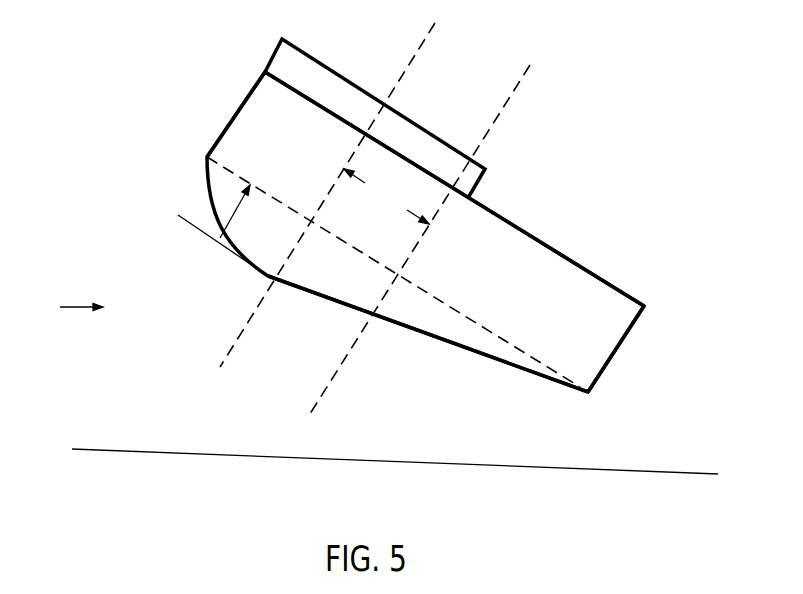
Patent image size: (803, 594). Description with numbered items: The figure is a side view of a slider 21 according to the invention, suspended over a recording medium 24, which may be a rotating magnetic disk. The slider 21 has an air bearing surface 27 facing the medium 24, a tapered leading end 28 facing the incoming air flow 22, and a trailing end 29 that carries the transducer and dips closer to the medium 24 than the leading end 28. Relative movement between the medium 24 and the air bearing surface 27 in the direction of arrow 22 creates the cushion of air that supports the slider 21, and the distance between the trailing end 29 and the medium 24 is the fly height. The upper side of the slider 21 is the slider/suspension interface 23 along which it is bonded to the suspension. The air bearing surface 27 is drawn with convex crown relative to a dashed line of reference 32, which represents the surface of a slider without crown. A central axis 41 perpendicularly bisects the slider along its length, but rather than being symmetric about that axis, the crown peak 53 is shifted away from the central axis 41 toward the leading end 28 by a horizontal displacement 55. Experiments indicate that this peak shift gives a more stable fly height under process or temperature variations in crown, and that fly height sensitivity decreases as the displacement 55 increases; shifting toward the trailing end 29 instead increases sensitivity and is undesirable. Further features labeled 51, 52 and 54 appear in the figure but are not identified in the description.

The slider 21 is at (425, 232).
The incoming air flow 22 is at (63, 306).
The slider/suspension interface 23 is at (428, 173).
The recording medium 24 is at (123, 450).
The air bearing surface 27 is at (398, 330).
The tapered leading end 28 is at (243, 102).
The trailing end 29 is at (632, 329).
The line of reference 32 is at (508, 343).
The central axis 41 is at (503, 111).
The top layer 51 is at (400, 112).
The front reference line 52 is at (422, 46).
The peak 53 is at (268, 276).
The angle between tangent and chord 54 is at (243, 212).
The horizontal displacement 55 is at (386, 196).